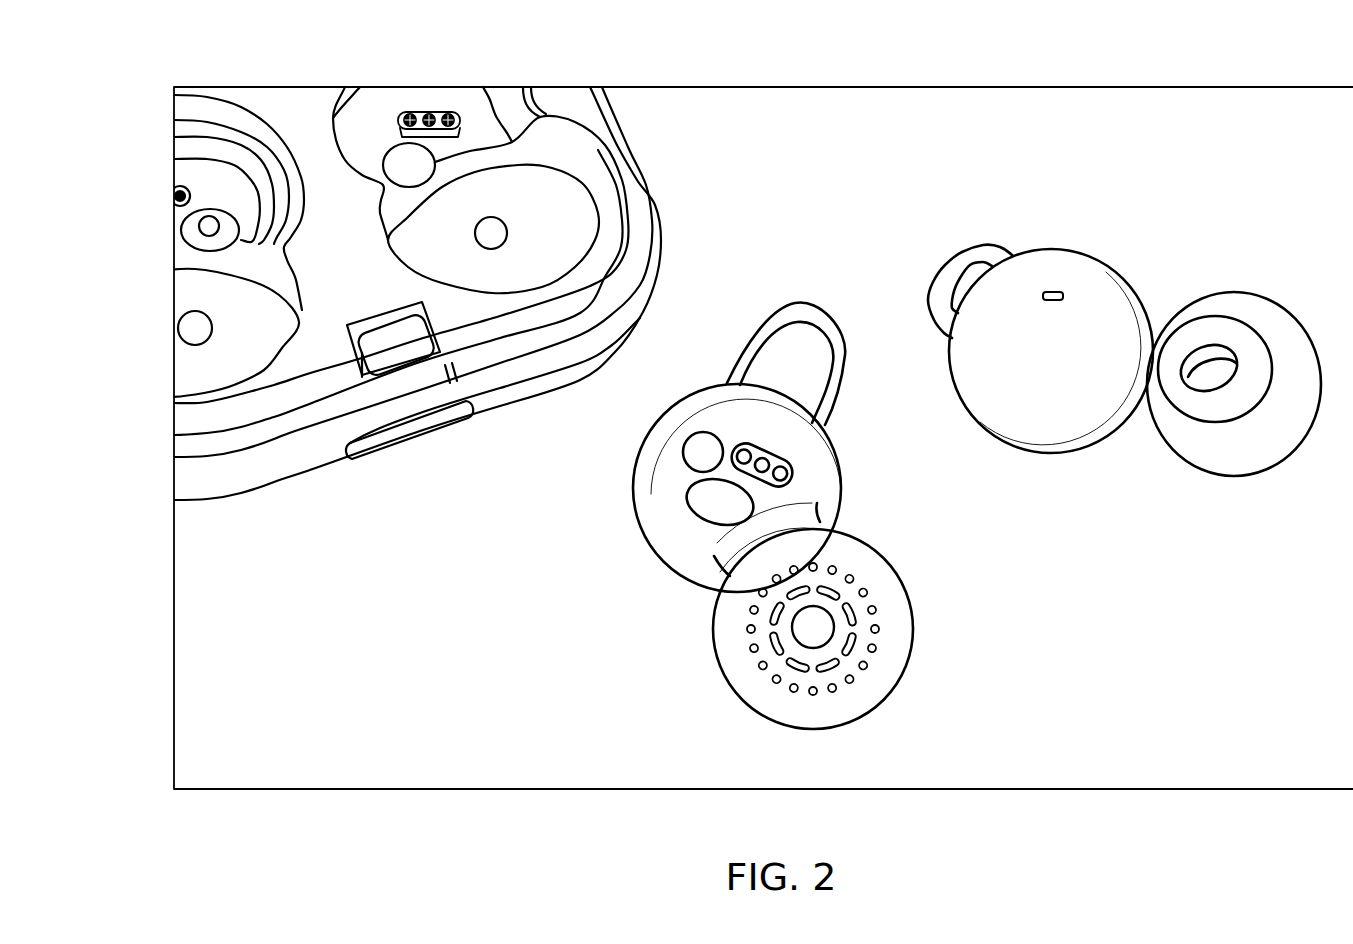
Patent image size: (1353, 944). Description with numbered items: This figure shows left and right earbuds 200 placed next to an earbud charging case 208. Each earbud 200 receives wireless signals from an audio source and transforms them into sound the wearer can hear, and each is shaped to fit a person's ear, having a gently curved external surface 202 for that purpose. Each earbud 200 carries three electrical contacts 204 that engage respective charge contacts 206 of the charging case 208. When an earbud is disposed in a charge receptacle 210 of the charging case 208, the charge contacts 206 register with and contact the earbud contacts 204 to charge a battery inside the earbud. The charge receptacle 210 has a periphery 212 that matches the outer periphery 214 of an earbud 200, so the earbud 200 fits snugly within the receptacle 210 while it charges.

The earbud 200 is at (1027, 369).
The gently curved external surface 202 is at (913, 614).
The electrical contact 204 is at (797, 467).
The charge contact 206 is at (429, 112).
The charging case 208 is at (417, 265).
The charge receptacle 210 is at (532, 247).
The periphery of the charge receptacle 212 is at (592, 182).
The outer periphery of the earbud 214 is at (1052, 250).